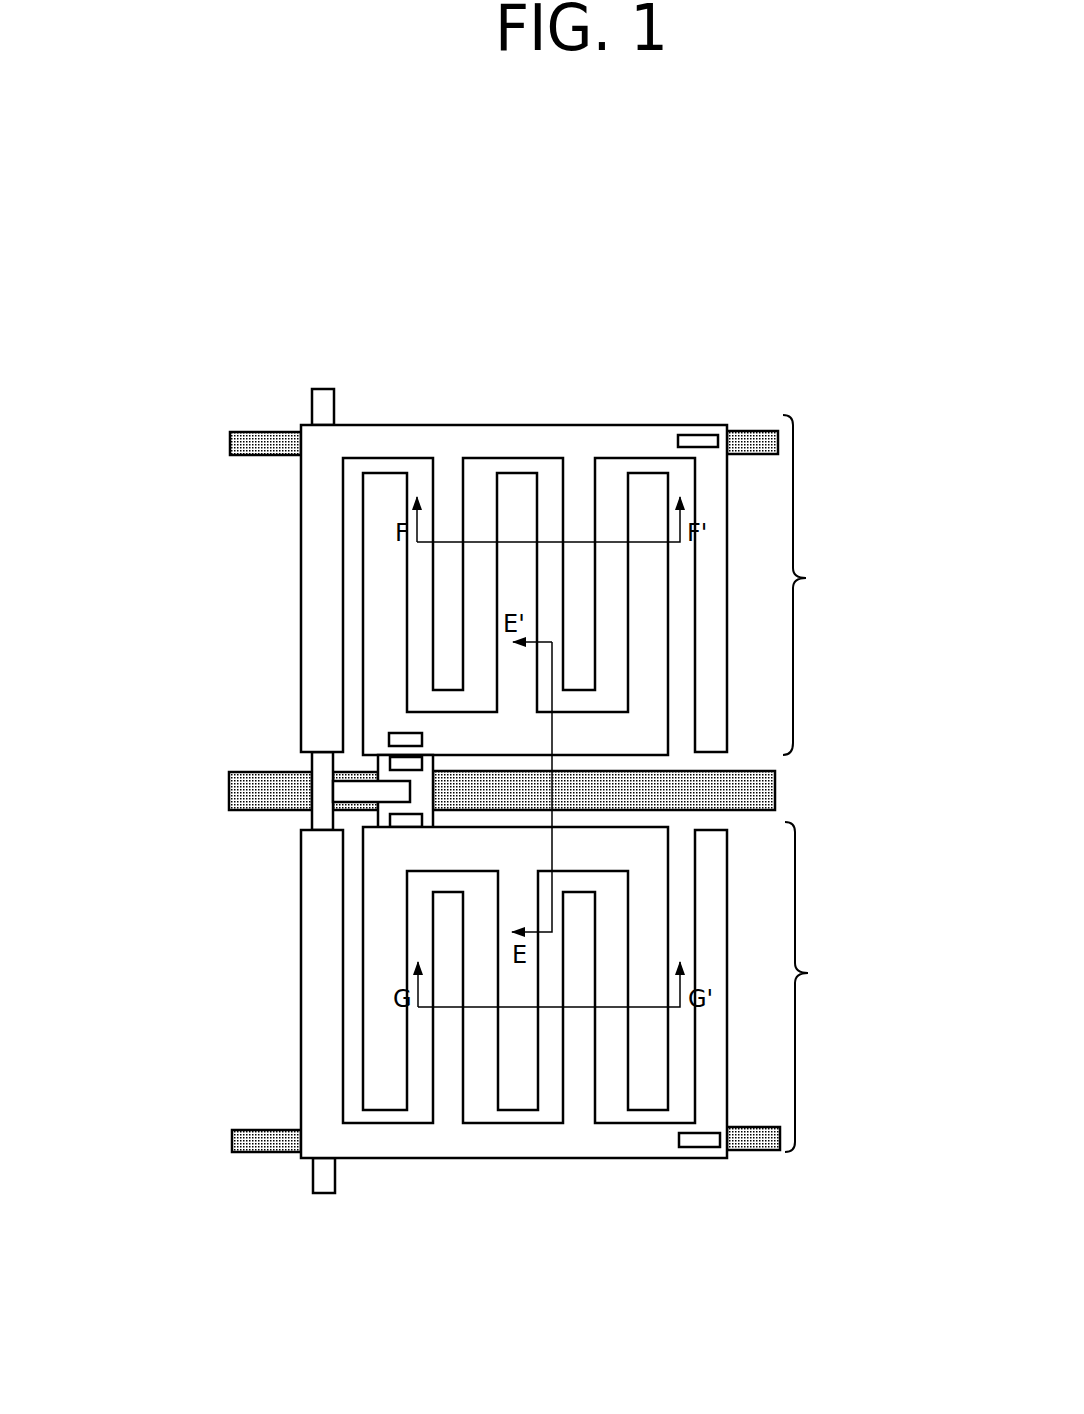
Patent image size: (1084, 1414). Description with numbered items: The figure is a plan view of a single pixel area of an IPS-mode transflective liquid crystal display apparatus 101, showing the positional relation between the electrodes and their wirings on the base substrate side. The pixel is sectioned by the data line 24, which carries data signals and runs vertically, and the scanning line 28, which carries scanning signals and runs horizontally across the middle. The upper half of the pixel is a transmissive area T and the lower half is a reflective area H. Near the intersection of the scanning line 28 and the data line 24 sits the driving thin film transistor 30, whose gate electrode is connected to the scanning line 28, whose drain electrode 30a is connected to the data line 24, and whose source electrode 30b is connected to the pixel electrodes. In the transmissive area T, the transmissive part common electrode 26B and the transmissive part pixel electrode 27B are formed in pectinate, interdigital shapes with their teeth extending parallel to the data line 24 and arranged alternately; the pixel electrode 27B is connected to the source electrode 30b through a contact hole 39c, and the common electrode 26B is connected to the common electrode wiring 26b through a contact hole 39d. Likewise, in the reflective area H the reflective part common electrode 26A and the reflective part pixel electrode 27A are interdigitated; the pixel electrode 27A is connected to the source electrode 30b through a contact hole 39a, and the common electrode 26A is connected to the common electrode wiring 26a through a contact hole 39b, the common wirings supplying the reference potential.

The transflective liquid crystal display apparatus 101 is at (760, 220).
The data line 24 is at (310, 407).
The reflective part common electrode 26A is at (535, 1147).
The transmissive part common electrode 26B is at (503, 440).
The common electrode wiring 26a is at (252, 1130).
The common electrode wiring 26b is at (242, 456).
The reflective part pixel electrode 27A is at (657, 893).
The transmissive part pixel electrode 27B is at (657, 667).
The scanning line 28 is at (228, 787).
The driving thin film transistor 30 is at (348, 767).
The drain electrode 30a is at (352, 795).
The source electrode 30b is at (382, 763).
The contact hole 39a is at (403, 852).
The contact hole 39b is at (700, 1141).
The contact hole 39c is at (400, 732).
The contact hole 39d is at (692, 433).
The transmissive area T is at (807, 585).
The reflective area H is at (811, 987).